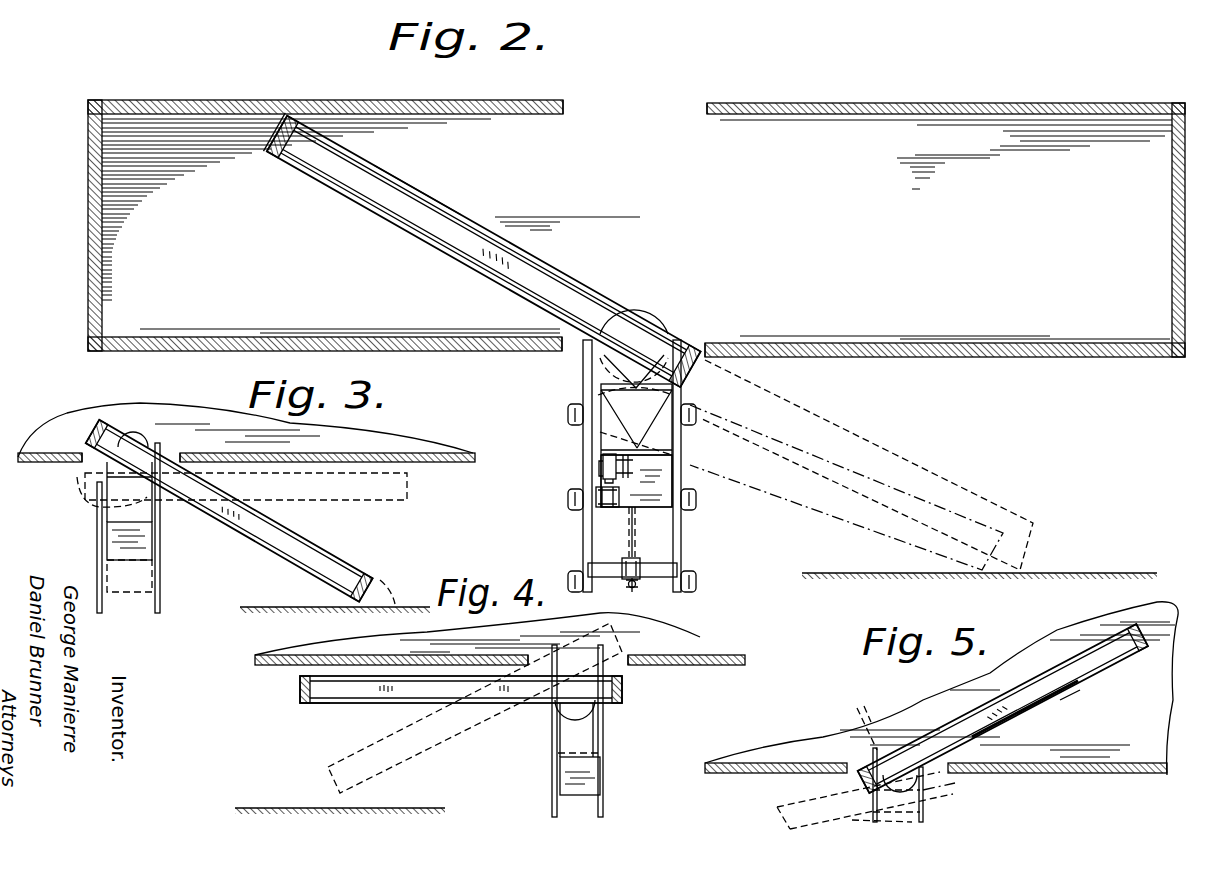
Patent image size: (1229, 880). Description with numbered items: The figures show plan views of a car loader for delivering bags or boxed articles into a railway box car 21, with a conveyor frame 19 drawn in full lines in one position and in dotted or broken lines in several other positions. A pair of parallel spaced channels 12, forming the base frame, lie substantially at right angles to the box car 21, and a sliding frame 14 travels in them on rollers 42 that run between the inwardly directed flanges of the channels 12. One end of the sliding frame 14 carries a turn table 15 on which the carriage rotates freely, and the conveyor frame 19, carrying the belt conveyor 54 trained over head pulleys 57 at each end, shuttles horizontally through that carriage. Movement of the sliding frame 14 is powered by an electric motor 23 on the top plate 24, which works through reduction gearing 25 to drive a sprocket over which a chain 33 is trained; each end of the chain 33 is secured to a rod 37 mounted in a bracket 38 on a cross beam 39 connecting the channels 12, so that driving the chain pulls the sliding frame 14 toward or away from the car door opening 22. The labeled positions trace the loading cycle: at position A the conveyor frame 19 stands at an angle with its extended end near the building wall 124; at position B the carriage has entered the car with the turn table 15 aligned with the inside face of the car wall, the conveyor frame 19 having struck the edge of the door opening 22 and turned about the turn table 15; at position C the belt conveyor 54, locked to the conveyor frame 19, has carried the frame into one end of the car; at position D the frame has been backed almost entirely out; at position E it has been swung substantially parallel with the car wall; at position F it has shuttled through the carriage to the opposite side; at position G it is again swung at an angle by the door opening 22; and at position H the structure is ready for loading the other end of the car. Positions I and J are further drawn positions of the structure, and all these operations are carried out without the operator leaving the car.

In FIG. 2, the channels 12 is at (583, 546).
In FIG. 3, the channels 12 is at (98, 556).
In FIG. 4, the channels 12 is at (552, 798).
In FIG. 2, the sliding frame 14 is at (672, 470).
In FIG. 3, the sliding frame 14 is at (143, 552).
In FIG. 4, the sliding frame 14 is at (592, 783).
In FIG. 5, the sliding frame 14 is at (940, 800).
In FIG. 2, the turn table 15 is at (658, 315).
In FIG. 3, the turn table 15 is at (100, 472).
In FIG. 4, the turn table 15 is at (598, 713).
In FIG. 5, the turn table 15 is at (868, 722).
In FIG. 2, the conveyor frame 19 is at (579, 275).
In FIG. 3, the conveyor frame 19 is at (218, 529).
In FIG. 4, the conveyor frame 19 is at (478, 723).
In FIG. 5, the conveyor frame 19 is at (996, 692).
In FIG. 2, the box car 21 is at (891, 104).
In FIG. 3, the box car 21 is at (435, 453).
In FIG. 4, the box car 21 is at (262, 660).
In FIG. 5, the box car 21 is at (735, 752).
In FIG. 2, the car door opening 22 is at (703, 108).
In FIG. 3, the car door opening 22 is at (175, 460).
In FIG. 4, the car door opening 22 is at (628, 662).
In FIG. 2, the electric motor 23 is at (596, 494).
In FIG. 2, the top plate 24 is at (672, 482).
In FIG. 2, the reduction gearing 25 is at (603, 464).
In FIG. 2, the chain 33 is at (634, 530).
In FIG. 2, the rod 37 is at (636, 588).
In FIG. 2, the bracket 38 is at (622, 562).
In FIG. 2, the cross beam 39 is at (606, 578).
In FIG. 2, the rollers 42 is at (575, 405).
In FIG. 2, the belt conveyor 54 is at (410, 212).
In FIG. 3, the belt conveyor 54 is at (233, 515).
In FIG. 4, the belt conveyor 54 is at (415, 690).
In FIG. 5, the belt conveyor 54 is at (968, 720).
In FIG. 2, the head pulleys 57 is at (288, 160).
In FIG. 2, the wall 124 is at (1122, 557).
In FIG. 3, the wall 124 is at (265, 607).
In FIG. 4, the wall 124 is at (262, 805).
In FIG. 2, the angled initial position A is at (1000, 521).
In FIG. 2, the carriage-in-car position B is at (792, 410).
In FIG. 2, the conveyor-frame-in-car position C is at (428, 190).
In FIG. 3, the almost-withdrawn position D is at (364, 571).
In FIG. 3, the parallel position E is at (407, 488).
In FIG. 4, the opposite-side shuttled position F is at (303, 705).
In FIG. 4, the angled re-entry position G is at (420, 752).
In FIG. 5, the second loading position H is at (1072, 695).
In FIG. 5, the trough position I is at (790, 797).
In FIG. 5, the trough position J is at (950, 798).